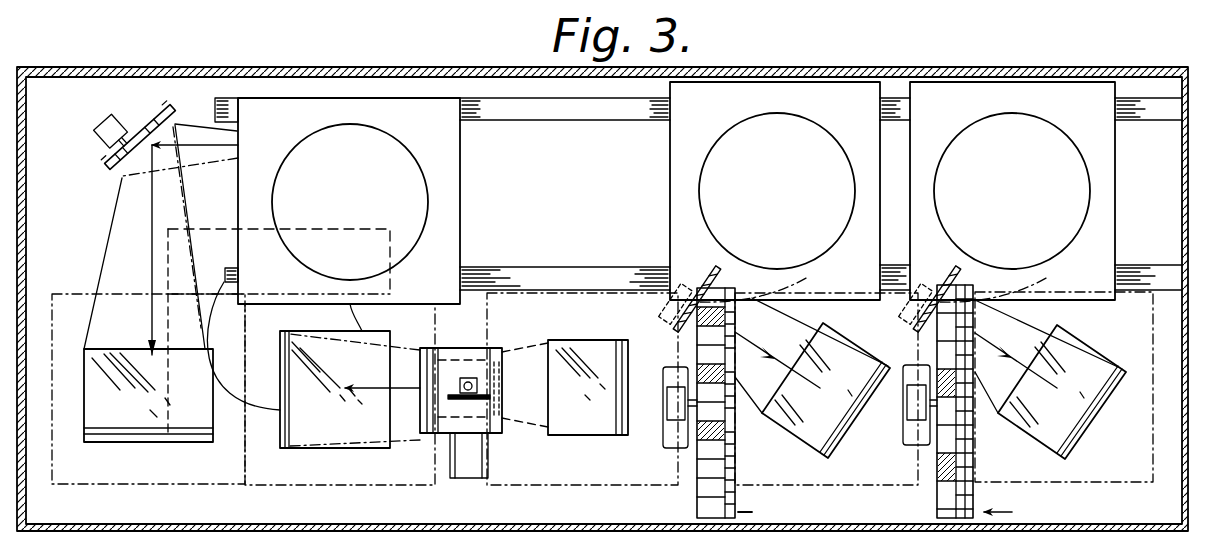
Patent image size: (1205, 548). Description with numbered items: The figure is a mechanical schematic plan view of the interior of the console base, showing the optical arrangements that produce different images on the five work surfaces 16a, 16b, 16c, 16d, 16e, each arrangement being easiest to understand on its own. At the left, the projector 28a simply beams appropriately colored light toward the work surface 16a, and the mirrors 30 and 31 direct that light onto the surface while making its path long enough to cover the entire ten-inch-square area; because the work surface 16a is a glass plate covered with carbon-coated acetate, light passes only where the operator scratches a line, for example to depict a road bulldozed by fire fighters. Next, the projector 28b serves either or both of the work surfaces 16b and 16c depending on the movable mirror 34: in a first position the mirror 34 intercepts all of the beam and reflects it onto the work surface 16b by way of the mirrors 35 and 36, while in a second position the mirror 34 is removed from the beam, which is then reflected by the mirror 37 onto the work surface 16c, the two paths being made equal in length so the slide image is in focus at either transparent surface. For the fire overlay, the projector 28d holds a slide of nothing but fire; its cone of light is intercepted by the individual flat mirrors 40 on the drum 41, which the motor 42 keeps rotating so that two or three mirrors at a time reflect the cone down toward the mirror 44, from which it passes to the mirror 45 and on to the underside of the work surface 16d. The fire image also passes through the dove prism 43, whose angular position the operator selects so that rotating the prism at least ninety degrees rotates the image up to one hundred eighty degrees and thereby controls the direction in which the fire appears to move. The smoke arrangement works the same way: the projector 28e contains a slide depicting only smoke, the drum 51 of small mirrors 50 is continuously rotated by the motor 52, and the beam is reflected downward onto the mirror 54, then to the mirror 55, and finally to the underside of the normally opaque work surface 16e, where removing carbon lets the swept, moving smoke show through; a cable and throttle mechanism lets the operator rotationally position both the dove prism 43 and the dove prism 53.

The work surface 16a is at (130, 478).
The work surface 16b is at (318, 478).
The work surface 16c is at (570, 475).
The work surface 16d is at (848, 475).
The work surface 16e is at (1095, 473).
The projector 28a is at (260, 139).
The projector 28b is at (209, 234).
The projector 28d is at (683, 133).
The projector 28e is at (923, 133).
The mirror 30 is at (170, 118).
The mirror 31 is at (121, 368).
The mirror 34 is at (467, 372).
The mirror 35 is at (452, 348).
The mirror 36 is at (355, 376).
The mirror 37 is at (590, 419).
The mirror 40 is at (700, 485).
The drum 41 is at (757, 500).
The motor 42 is at (663, 416).
The dove prism 43 is at (676, 320).
The mirror 44 is at (766, 283).
The mirror 45 is at (818, 430).
The mirror 50 is at (940, 485).
The drum 51 is at (1004, 500).
The motor 52 is at (912, 403).
The dove prism 53 is at (916, 321).
The mirror 54 is at (1006, 282).
The mirror 55 is at (1097, 364).